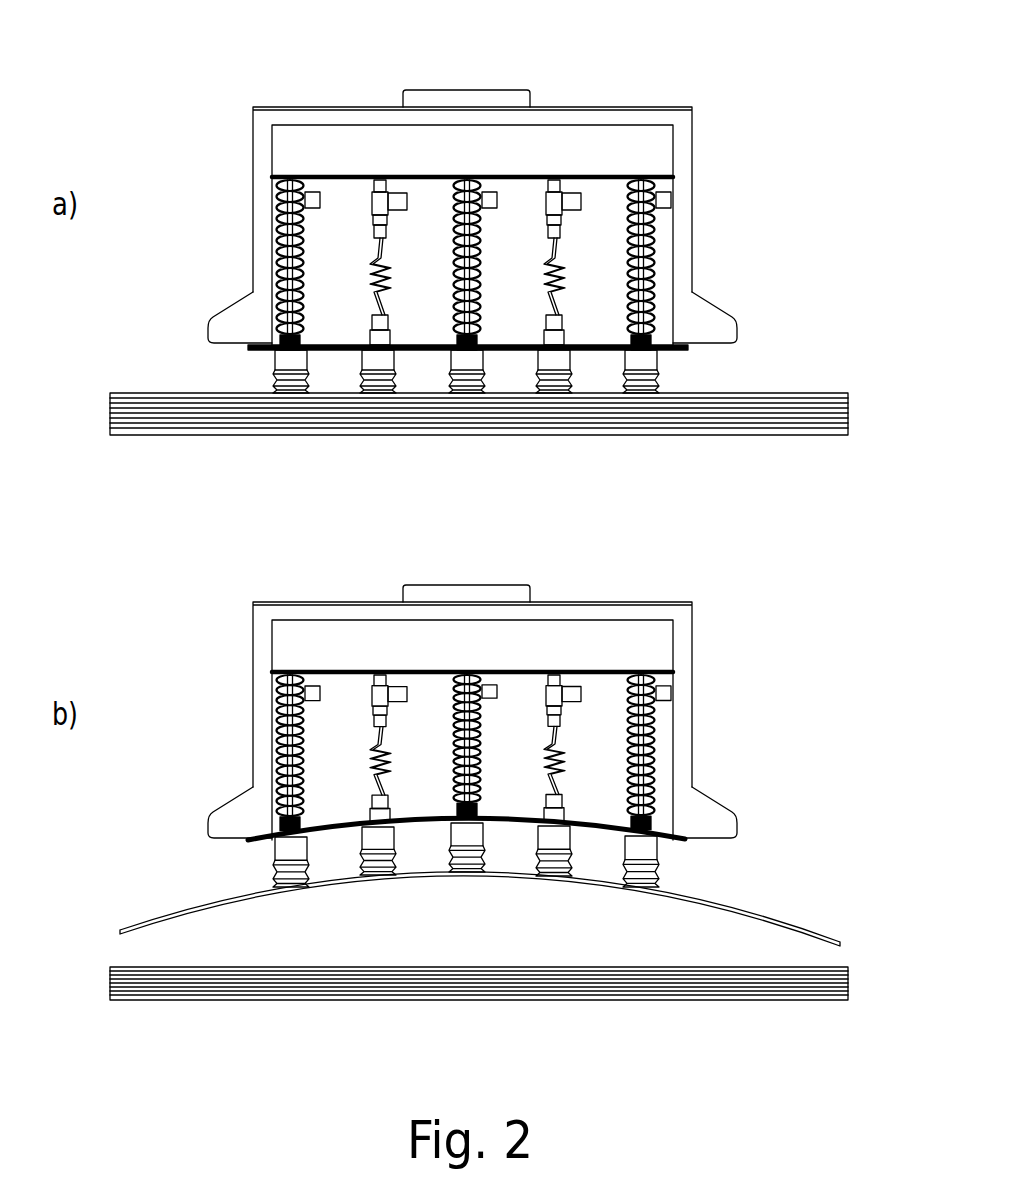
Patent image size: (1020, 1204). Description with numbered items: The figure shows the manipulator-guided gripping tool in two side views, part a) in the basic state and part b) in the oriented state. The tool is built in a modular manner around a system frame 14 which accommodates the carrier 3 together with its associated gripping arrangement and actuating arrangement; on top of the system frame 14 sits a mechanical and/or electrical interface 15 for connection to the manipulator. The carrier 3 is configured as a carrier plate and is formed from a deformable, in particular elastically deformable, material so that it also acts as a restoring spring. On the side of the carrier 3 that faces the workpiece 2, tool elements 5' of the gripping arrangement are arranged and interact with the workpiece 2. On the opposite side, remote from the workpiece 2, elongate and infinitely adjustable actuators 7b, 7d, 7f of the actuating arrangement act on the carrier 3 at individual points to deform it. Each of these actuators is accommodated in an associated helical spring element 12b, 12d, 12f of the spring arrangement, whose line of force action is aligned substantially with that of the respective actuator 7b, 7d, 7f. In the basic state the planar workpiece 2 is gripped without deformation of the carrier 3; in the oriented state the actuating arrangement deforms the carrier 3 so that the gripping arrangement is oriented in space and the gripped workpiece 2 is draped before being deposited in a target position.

The workpiece 2 is at (762, 393).
The carrier 3 is at (672, 348).
The tool element 5' is at (453, 655).
The actuator 7b is at (742, 496).
The actuator 7d is at (571, 421).
The actuator 7f is at (220, 466).
The spring element 12b is at (663, 250).
The spring element 12d is at (493, 263).
The spring element 12f is at (270, 248).
The system frame 14 is at (660, 162).
The interface 15 is at (465, 97).